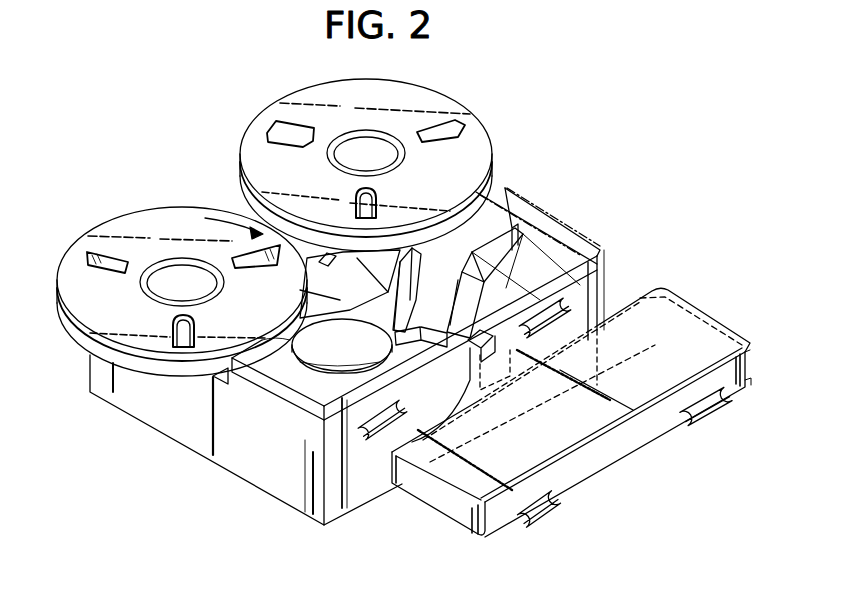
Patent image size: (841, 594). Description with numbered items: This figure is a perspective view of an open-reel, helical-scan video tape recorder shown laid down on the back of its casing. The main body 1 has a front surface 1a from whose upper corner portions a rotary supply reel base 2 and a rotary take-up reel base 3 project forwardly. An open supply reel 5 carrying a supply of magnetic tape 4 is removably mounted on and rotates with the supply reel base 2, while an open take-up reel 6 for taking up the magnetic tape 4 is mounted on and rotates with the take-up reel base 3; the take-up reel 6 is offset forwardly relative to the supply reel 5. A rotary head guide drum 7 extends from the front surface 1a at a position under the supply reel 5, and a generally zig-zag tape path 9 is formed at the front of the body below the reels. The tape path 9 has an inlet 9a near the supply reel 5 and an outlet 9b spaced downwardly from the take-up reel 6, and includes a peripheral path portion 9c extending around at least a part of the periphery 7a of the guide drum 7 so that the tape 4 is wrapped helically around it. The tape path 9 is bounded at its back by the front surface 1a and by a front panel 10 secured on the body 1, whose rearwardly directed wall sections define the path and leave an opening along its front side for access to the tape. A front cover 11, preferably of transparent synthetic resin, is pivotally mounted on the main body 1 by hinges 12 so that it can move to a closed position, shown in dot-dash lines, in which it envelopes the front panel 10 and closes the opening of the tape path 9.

The main body 1 is at (233, 445).
The front surface 1a is at (212, 380).
The supply reel base 2 is at (158, 283).
The take-up reel base 3 is at (345, 158).
The magnetic tape 4 is at (90, 262).
The supply reel 5 is at (176, 214).
The take-up reel 6 is at (432, 97).
The rotary head guide drum 7 is at (313, 362).
The periphery of the guide drum 7a is at (303, 362).
The tape path 9 is at (463, 303).
The inlet 9a is at (327, 276).
The outlet 9b is at (516, 226).
The peripheral path portion 9c is at (288, 355).
The front panel 10 is at (328, 398).
The front cover 11 is at (558, 448).
The hinges 12 is at (543, 305).